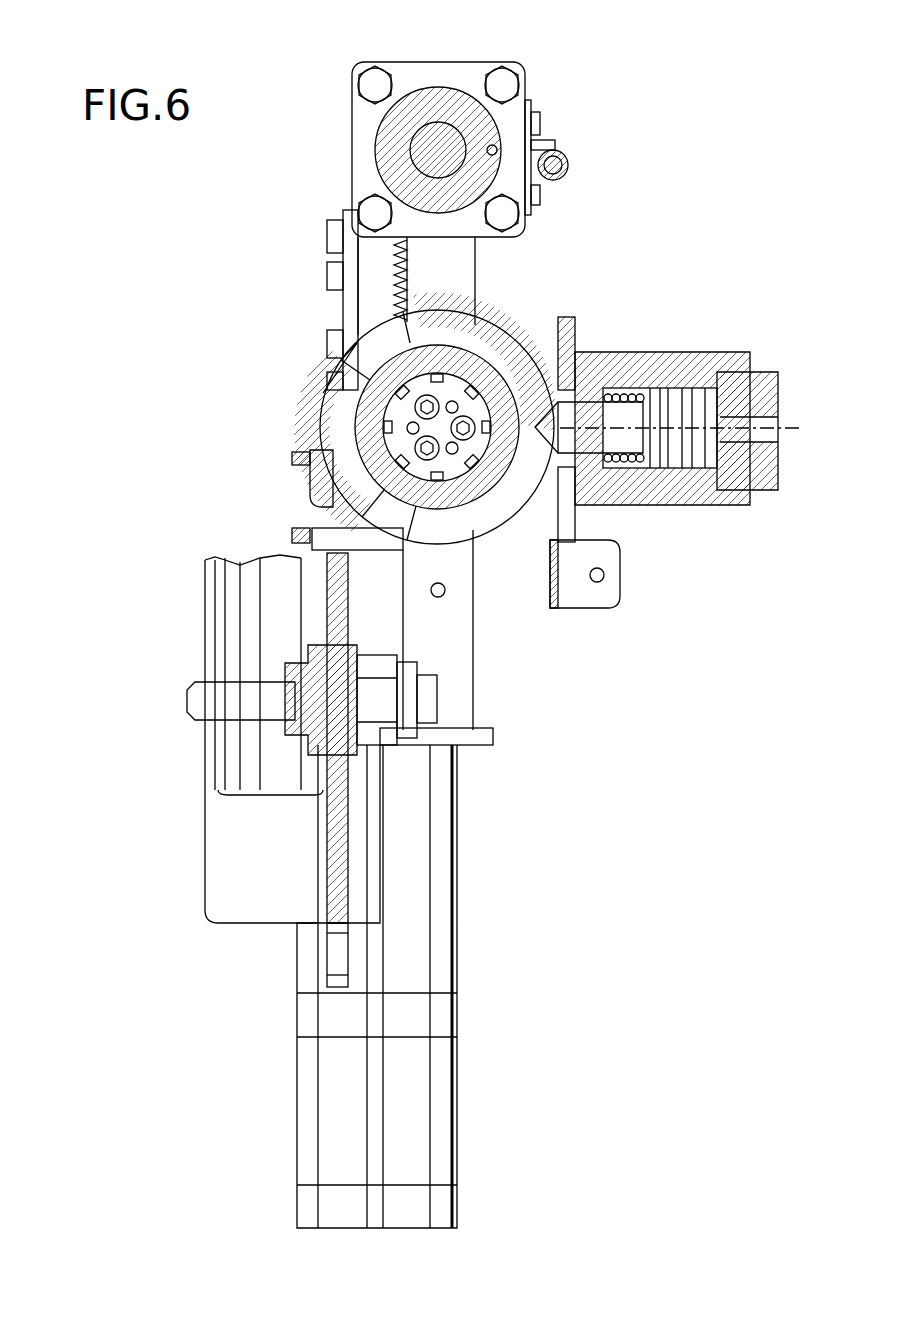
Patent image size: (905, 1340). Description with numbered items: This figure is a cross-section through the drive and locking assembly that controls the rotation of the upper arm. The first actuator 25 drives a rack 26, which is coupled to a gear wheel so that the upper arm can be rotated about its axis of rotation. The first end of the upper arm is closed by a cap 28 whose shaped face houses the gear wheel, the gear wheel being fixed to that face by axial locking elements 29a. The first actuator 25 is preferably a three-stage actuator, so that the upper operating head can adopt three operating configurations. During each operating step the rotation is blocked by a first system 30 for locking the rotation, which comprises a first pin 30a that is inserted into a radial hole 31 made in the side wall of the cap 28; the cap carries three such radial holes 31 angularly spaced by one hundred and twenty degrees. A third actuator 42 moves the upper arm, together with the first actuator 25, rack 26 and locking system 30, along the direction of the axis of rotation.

The third actuator 42 is at (437, 95).
The rack 26 is at (353, 265).
The radial hole 31 is at (385, 345).
The cap 28 is at (327, 392).
The axial locking elements 29a is at (390, 422).
The first system for locking the rotation 30 is at (650, 340).
The first pin 30a is at (623, 435).
The first actuator 25 is at (340, 1088).